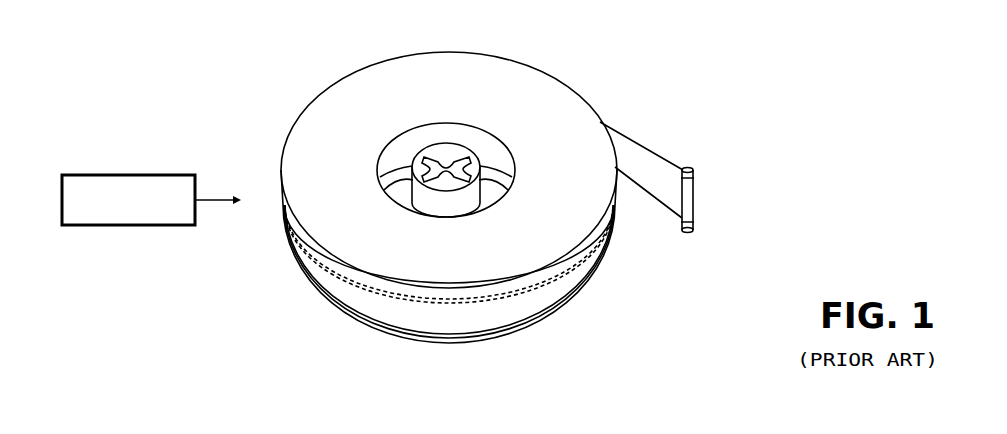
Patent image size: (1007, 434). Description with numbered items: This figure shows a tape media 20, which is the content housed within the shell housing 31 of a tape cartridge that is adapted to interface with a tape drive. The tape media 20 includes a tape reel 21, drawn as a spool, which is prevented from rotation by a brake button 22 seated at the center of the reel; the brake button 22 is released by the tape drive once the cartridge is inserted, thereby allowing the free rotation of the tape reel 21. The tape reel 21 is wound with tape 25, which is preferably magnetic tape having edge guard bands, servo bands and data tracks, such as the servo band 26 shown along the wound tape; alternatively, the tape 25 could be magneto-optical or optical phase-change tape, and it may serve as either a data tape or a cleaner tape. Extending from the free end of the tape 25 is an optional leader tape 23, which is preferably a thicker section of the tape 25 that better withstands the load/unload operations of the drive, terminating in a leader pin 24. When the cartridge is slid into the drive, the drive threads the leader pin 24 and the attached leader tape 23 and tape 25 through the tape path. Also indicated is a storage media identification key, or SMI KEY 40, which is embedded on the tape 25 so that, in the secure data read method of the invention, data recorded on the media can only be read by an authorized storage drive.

The tape media 20 is at (568, 46).
The tape reel 21 is at (328, 102).
The brake button 22 is at (452, 148).
The leader tape 23 is at (637, 143).
The leader pin 24 is at (688, 167).
The tape 25 is at (503, 318).
The servo band 26 is at (380, 288).
The shell housing 31 is at (437, 428).
The storage media identification key (SMI KEY) 40 is at (188, 211).